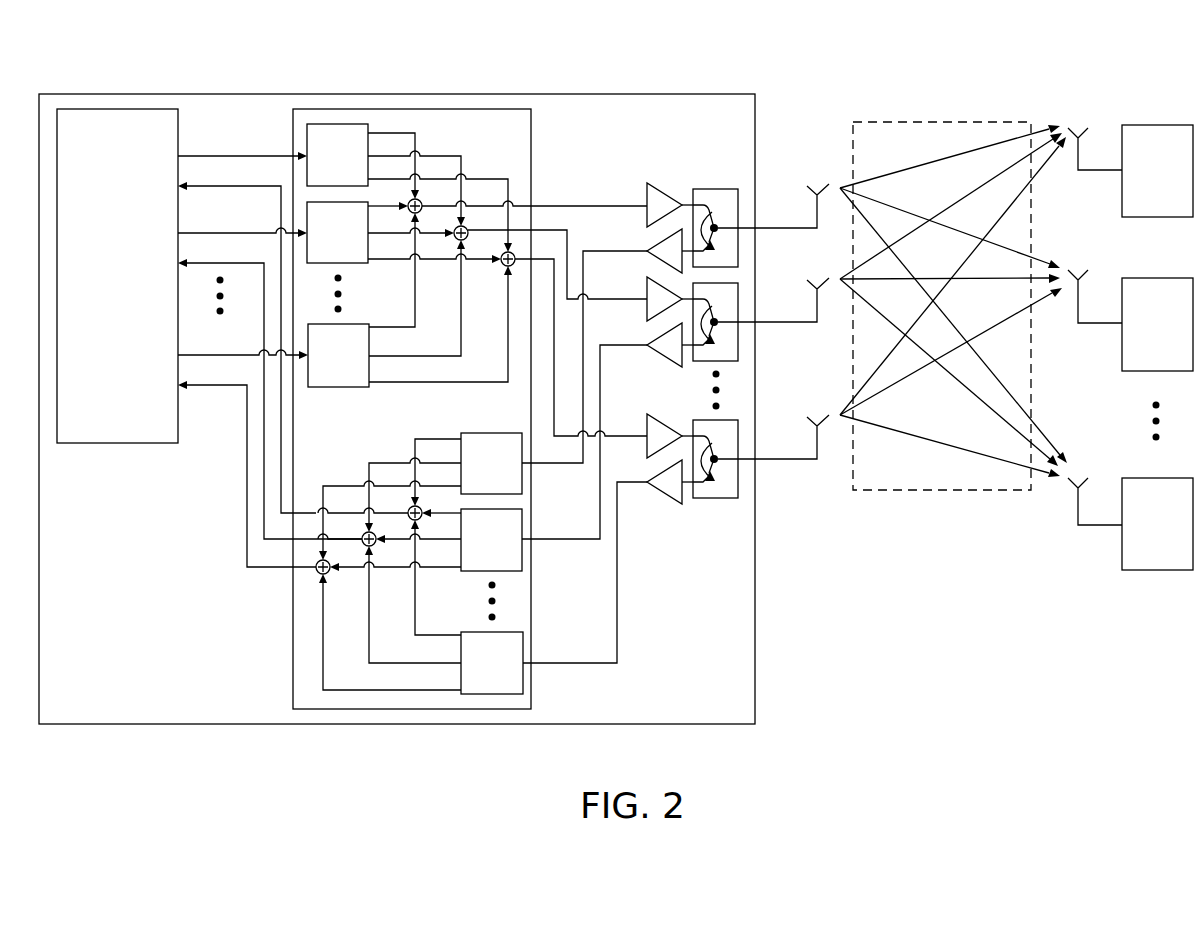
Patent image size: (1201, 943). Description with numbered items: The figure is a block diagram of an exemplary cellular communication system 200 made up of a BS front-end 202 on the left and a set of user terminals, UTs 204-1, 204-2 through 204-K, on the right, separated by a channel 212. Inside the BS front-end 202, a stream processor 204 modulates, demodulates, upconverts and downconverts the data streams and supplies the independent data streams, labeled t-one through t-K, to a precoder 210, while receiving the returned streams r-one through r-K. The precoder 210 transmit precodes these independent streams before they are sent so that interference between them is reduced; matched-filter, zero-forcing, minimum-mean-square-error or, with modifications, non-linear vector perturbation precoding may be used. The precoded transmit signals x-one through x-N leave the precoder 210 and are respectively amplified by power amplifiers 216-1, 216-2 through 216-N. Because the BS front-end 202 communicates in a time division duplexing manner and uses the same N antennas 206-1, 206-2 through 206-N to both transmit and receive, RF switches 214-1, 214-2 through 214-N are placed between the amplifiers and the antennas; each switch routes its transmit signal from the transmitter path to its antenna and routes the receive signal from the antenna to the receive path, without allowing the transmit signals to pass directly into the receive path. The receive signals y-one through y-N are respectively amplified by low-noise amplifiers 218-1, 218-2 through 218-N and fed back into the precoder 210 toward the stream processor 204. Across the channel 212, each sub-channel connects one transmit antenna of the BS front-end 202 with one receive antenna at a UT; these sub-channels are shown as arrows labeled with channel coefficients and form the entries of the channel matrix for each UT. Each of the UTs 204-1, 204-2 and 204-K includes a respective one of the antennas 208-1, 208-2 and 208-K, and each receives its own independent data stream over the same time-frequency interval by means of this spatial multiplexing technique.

The cellular communication system 200 is at (1003, 721).
The BS front-end 202 is at (247, 95).
The stream processor 204 is at (209, 338).
The precoder 210 is at (407, 109).
The channel 212 is at (936, 122).
The power amplifier 216-1 is at (648, 203).
The power amplifier 216-2 is at (648, 297).
The power amplifier 216-N is at (648, 434).
The low-noise amplifier 218-1 is at (648, 249).
The low-noise amplifier 218-2 is at (648, 343).
The low-noise amplifier 218-N is at (648, 480).
The RF switch 214-1 is at (740, 189).
The RF switch 214-2 is at (740, 283).
The RF switch 214-N is at (740, 420).
The antenna 206-1 is at (812, 185).
The antenna 206-2 is at (812, 277).
The antenna 206-N is at (812, 415).
The antenna 208-1 is at (1082, 126).
The antenna 208-2 is at (1082, 278).
The antenna 208-K is at (1082, 480).
The UT 204-1 is at (1157, 171).
The UT 204-2 is at (1157, 324).
The UT 204-K is at (1157, 524).